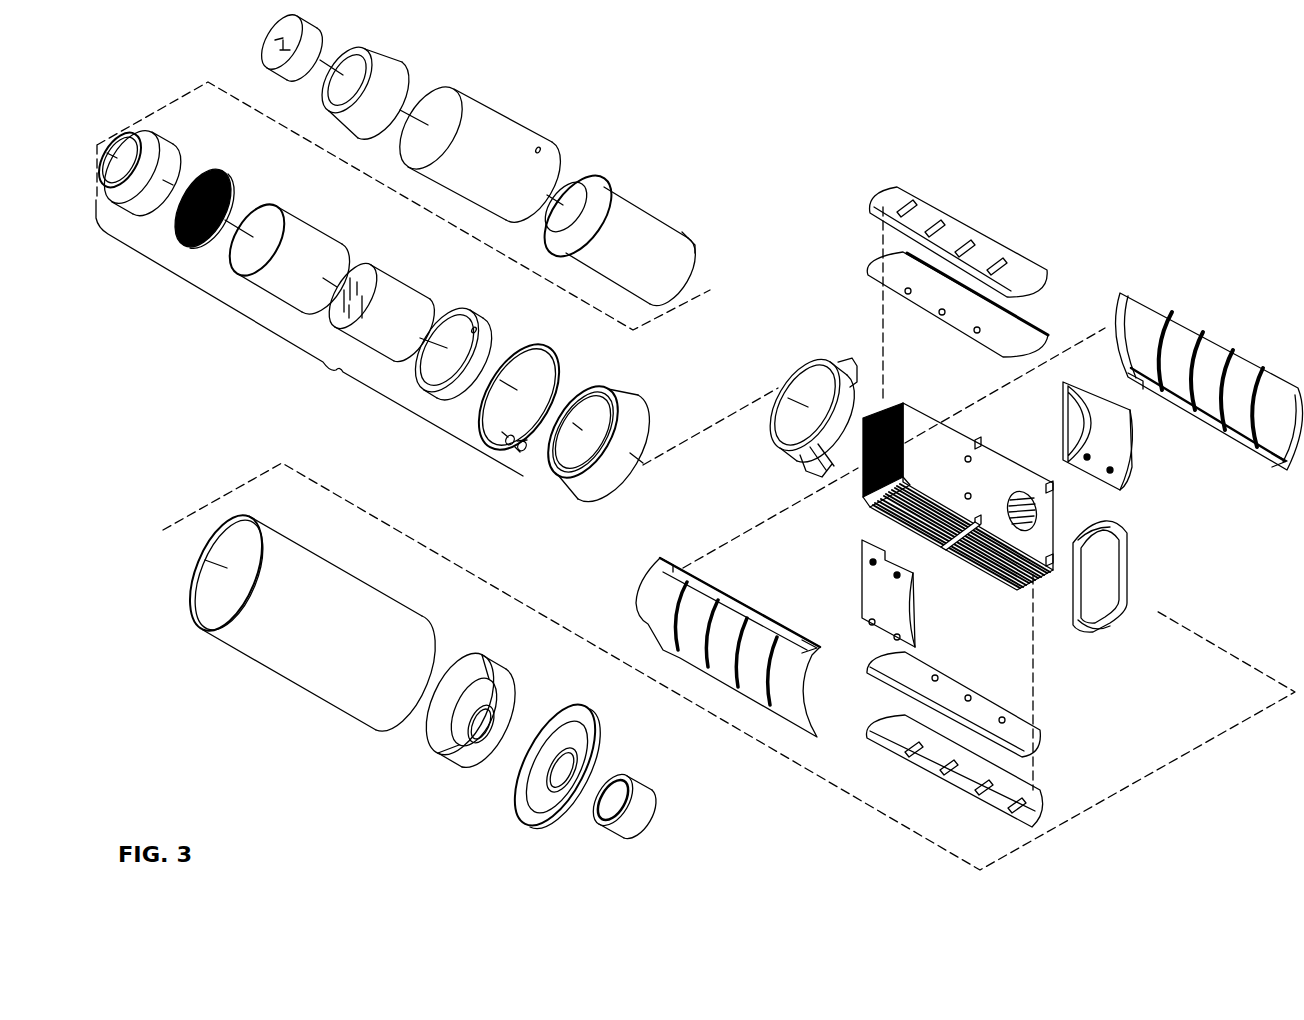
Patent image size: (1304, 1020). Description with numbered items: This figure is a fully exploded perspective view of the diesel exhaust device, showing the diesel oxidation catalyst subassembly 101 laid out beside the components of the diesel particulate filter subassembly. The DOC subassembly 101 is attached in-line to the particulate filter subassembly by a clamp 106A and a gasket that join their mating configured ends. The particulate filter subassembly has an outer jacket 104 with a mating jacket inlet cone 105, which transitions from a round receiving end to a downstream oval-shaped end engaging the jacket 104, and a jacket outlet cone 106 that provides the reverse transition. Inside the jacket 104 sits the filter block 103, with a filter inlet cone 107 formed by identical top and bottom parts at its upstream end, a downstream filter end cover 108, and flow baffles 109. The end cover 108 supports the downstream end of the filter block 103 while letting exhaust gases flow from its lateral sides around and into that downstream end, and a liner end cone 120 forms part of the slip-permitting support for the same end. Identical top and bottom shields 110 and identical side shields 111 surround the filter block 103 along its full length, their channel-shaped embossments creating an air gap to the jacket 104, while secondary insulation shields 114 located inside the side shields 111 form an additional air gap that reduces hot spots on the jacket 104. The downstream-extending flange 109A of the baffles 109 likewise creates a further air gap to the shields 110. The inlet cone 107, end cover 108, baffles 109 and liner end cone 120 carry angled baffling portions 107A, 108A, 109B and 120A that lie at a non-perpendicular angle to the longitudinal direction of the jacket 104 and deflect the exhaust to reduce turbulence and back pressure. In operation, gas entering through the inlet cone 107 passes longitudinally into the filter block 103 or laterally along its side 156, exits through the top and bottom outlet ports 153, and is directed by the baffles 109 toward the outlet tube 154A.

The DOC subassembly 101 is at (336, 370).
The filter block 103 is at (1005, 458).
The outer jacket 104 is at (293, 668).
The jacket inlet cone 105 is at (577, 385).
The jacket outlet cone 106 is at (575, 708).
The clamp 106A is at (518, 348).
The filter inlet cone 107 is at (795, 372).
The angled baffling portion 107A is at (827, 363).
The filter end cover 108 is at (1130, 545).
The angled baffling portion 108A is at (1093, 523).
The flow baffles 109 is at (1130, 470).
The downstream-extending flange 109A is at (1118, 437).
The angled baffling portion 109B is at (1077, 413).
The top and bottom shields 110 is at (1190, 335).
The side shields 111 is at (893, 185).
The secondary insulation shields 114 is at (875, 267).
The liner end cone 120 is at (487, 660).
The angled baffling portion 120A is at (460, 748).
The outlet ports 153 is at (1050, 487).
The outlet tube 154A is at (643, 782).
The side of the filter block 156 is at (982, 570).